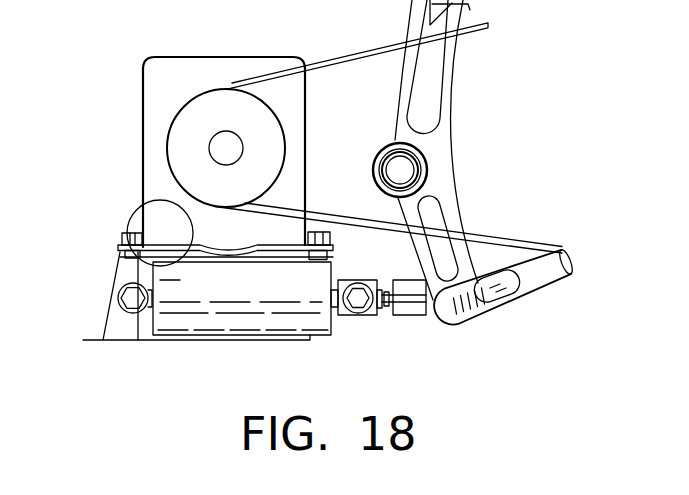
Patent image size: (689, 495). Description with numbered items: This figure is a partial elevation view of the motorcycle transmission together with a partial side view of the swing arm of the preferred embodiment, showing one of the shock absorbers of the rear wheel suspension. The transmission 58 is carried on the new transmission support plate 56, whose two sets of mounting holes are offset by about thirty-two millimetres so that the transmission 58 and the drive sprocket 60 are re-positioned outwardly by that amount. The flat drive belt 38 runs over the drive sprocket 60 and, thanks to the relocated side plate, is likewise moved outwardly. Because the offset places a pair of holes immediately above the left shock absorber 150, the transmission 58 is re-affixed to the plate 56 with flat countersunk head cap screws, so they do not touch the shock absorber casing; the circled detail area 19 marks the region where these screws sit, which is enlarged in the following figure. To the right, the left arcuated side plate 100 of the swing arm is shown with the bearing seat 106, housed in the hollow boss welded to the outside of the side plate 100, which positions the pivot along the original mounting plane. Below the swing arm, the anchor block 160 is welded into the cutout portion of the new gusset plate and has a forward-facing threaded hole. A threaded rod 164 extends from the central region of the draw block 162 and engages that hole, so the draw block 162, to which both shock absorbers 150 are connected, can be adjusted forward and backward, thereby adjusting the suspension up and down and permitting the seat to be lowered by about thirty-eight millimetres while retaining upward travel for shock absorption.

The drive assembly detail 19 is at (142, 202).
The flat drive belt 38 is at (367, 53).
The transmission support plate 56 is at (135, 263).
The transmission 58 is at (198, 75).
The drive sprocket 60 is at (177, 132).
The left arcuated side plate 100 is at (440, 168).
The bearing seat 106 is at (398, 163).
The shock absorber 150 is at (197, 318).
The anchor block 160 is at (425, 317).
The draw block 162 is at (368, 315).
The threaded rod 164 is at (387, 315).